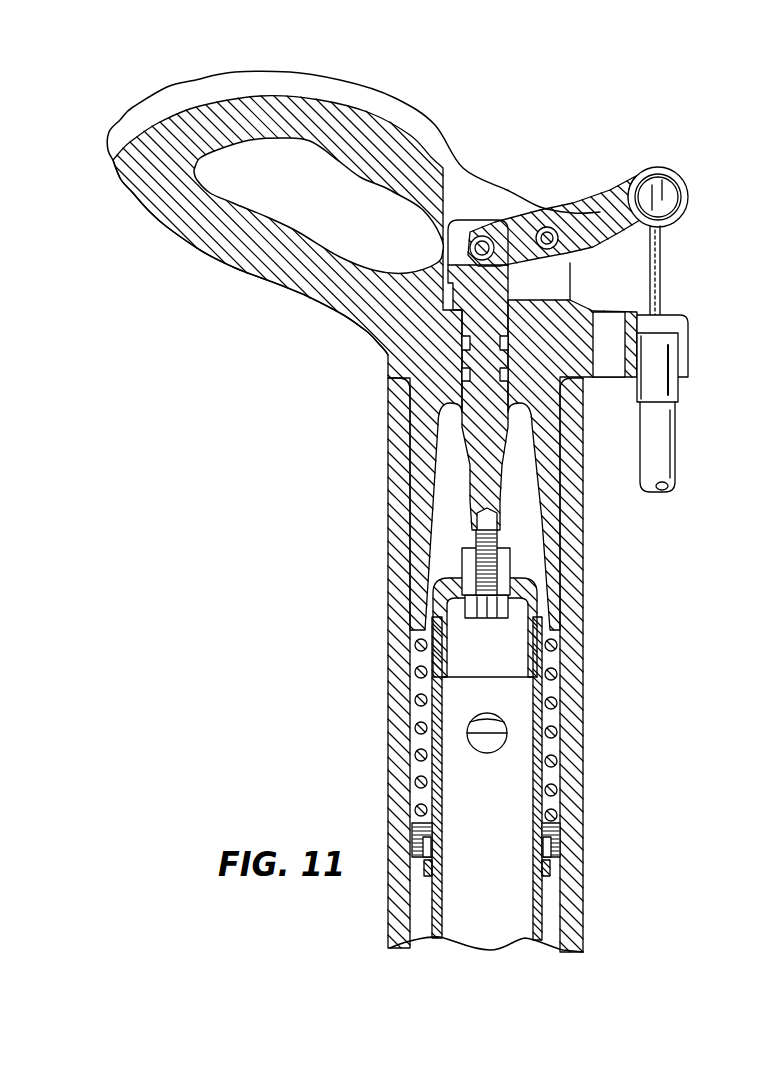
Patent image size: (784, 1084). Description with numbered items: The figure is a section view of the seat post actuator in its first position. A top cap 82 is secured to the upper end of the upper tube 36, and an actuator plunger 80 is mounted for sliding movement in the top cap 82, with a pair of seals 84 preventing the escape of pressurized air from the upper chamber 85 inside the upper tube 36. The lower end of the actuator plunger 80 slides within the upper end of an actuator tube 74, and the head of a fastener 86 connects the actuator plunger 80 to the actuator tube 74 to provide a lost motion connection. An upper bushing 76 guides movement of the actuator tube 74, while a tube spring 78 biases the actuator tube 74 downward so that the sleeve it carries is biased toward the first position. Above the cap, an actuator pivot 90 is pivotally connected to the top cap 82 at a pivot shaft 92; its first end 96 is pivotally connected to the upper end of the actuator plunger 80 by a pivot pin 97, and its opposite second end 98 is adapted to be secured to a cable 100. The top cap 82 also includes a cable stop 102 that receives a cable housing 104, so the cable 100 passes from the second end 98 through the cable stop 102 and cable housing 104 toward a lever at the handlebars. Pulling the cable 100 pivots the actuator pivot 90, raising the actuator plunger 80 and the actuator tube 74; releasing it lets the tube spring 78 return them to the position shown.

The upper tube 36 is at (392, 620).
The actuator tube 74 is at (548, 885).
The upper bushing 76 is at (560, 835).
The tube spring 78 is at (556, 740).
The actuator plunger 80 is at (477, 468).
The top cap 82 is at (363, 303).
The seals 84 is at (462, 374).
The upper chamber 85 is at (440, 510).
The fastener 86 is at (470, 572).
The actuator pivot 90 is at (520, 222).
The pivot shaft 92 is at (546, 228).
The first end 96 is at (498, 222).
The pivot pin 97 is at (483, 250).
The second end 98 is at (652, 167).
The cable 100 is at (662, 296).
The cable stop 102 is at (690, 372).
The cable housing 104 is at (676, 435).